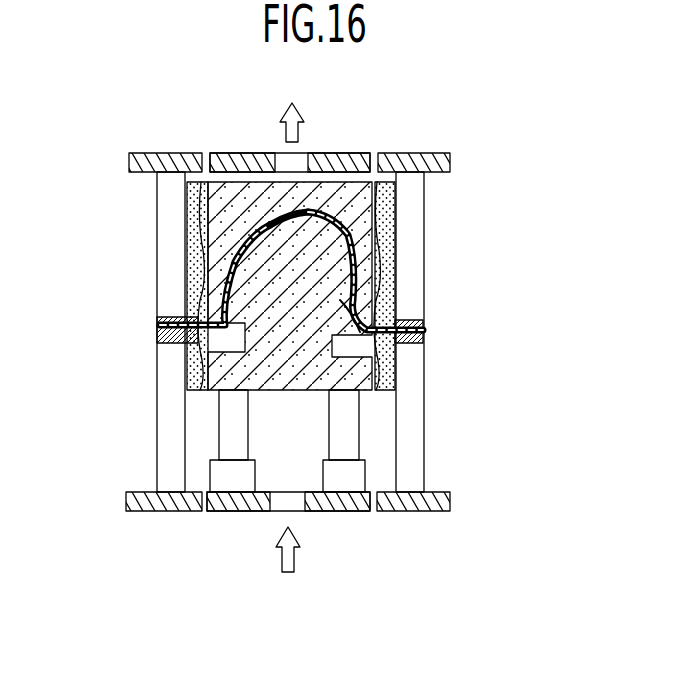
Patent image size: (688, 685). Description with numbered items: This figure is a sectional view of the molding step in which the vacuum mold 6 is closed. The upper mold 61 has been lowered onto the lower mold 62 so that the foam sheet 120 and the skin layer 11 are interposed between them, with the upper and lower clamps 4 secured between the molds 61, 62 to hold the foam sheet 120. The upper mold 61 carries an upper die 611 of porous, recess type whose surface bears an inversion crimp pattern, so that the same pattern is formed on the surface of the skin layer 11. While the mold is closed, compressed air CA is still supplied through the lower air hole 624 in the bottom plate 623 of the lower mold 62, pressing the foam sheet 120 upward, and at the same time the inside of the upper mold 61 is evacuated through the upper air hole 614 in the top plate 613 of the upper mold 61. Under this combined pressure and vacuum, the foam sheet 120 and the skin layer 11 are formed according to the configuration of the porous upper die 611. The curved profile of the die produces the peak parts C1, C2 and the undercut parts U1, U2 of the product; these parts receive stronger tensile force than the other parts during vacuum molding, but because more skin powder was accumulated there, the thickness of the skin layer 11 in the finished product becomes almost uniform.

The vacuum mold 6 is at (135, 206).
The upper mold 61 is at (425, 258).
The lower mold 62 is at (427, 427).
The upper die 611 is at (380, 207).
The top plate 613 is at (402, 153).
The upper air hole 614 is at (280, 157).
The bottom plate 623 is at (412, 513).
The air hole 624 is at (282, 510).
The skin layer 11 is at (160, 312).
The foam sheet 120 is at (187, 347).
The clamp 4 is at (423, 323).
The peak part C1 is at (213, 251).
The peak part C2 is at (355, 222).
The undercut part U1 is at (187, 295).
The undercut part U2 is at (365, 302).
The compressed air CA is at (293, 558).